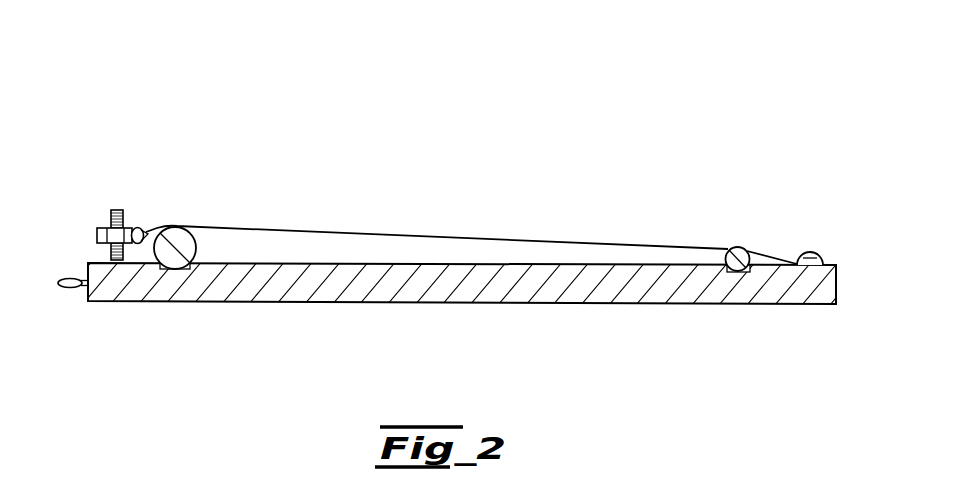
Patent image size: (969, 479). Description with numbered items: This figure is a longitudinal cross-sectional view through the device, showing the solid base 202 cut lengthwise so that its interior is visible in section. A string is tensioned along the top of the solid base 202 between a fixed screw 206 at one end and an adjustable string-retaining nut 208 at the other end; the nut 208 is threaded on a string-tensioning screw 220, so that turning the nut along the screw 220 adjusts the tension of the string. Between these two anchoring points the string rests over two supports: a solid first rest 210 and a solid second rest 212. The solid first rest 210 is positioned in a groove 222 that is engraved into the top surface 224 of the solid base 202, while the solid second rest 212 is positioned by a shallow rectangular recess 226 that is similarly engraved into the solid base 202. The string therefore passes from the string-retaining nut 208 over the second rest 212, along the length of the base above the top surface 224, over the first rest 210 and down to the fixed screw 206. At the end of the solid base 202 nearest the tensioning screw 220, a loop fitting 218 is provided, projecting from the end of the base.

The solid base 202 is at (461, 314).
The fixed screw 206 is at (818, 226).
The adjustable string-retaining nut 208 is at (103, 207).
The solid first rest 210 is at (738, 228).
The solid second rest 212 is at (175, 219).
The loop fitting 218 is at (69, 321).
The string-tensioning screw 220 is at (120, 192).
The groove 222 is at (748, 316).
The top surface 224 is at (471, 221).
The shallow rectangular recess 226 is at (185, 313).